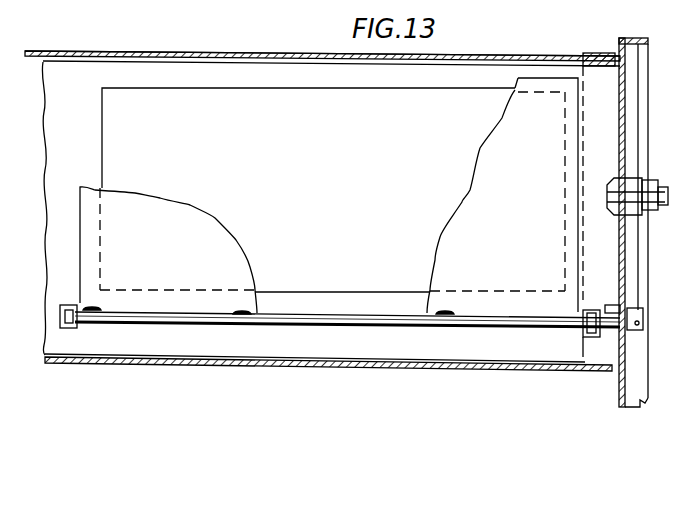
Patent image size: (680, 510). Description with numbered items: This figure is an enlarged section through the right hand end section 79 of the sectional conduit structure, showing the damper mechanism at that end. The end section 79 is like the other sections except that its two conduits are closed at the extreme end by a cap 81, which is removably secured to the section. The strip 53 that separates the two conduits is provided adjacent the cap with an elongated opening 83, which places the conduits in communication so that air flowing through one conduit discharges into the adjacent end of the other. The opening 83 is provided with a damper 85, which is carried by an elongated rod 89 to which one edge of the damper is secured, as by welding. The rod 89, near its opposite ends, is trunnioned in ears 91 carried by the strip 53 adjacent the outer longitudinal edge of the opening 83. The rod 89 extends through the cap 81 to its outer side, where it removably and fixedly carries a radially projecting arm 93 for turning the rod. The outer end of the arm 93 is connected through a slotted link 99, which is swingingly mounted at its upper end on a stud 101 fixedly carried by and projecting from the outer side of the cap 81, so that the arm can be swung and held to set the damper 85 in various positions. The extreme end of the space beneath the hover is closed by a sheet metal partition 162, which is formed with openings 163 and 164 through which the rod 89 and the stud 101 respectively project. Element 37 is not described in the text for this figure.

The top rail 37 is at (32, 52).
The right hand end section 79 is at (206, 52).
The strip 53 is at (50, 120).
The elongated opening 83 is at (108, 152).
The cap 81 is at (617, 133).
The damper 85 is at (215, 218).
The elongated rod 89 is at (295, 326).
The ears 91 is at (80, 325).
The sheet metal partition 162 is at (628, 58).
The radially projecting arm 93 is at (642, 257).
The opening 164 is at (617, 175).
The stud 101 is at (617, 190).
The link 99 is at (642, 215).
The opening 163 is at (617, 307).